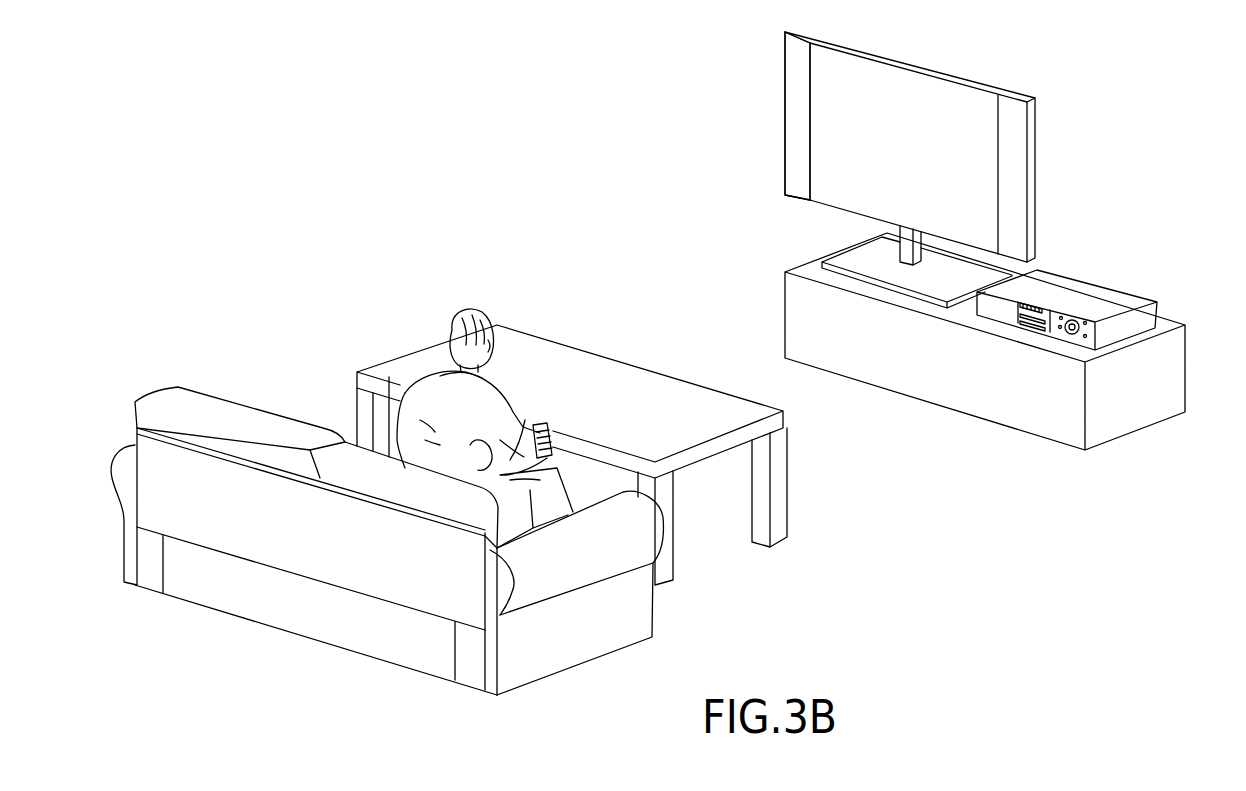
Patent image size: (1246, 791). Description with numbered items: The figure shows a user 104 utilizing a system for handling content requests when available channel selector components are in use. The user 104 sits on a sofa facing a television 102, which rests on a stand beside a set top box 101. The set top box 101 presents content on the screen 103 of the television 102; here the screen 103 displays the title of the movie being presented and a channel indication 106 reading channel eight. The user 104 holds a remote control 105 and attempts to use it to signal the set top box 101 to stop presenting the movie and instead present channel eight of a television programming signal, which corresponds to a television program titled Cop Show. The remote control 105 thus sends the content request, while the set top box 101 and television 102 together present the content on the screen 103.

The set top box 101 is at (1063, 272).
The television 102 is at (1035, 160).
The screen 103 is at (808, 132).
The user 104 is at (452, 314).
The remote control 105 is at (558, 432).
The channel indicator display 106 is at (877, 168).